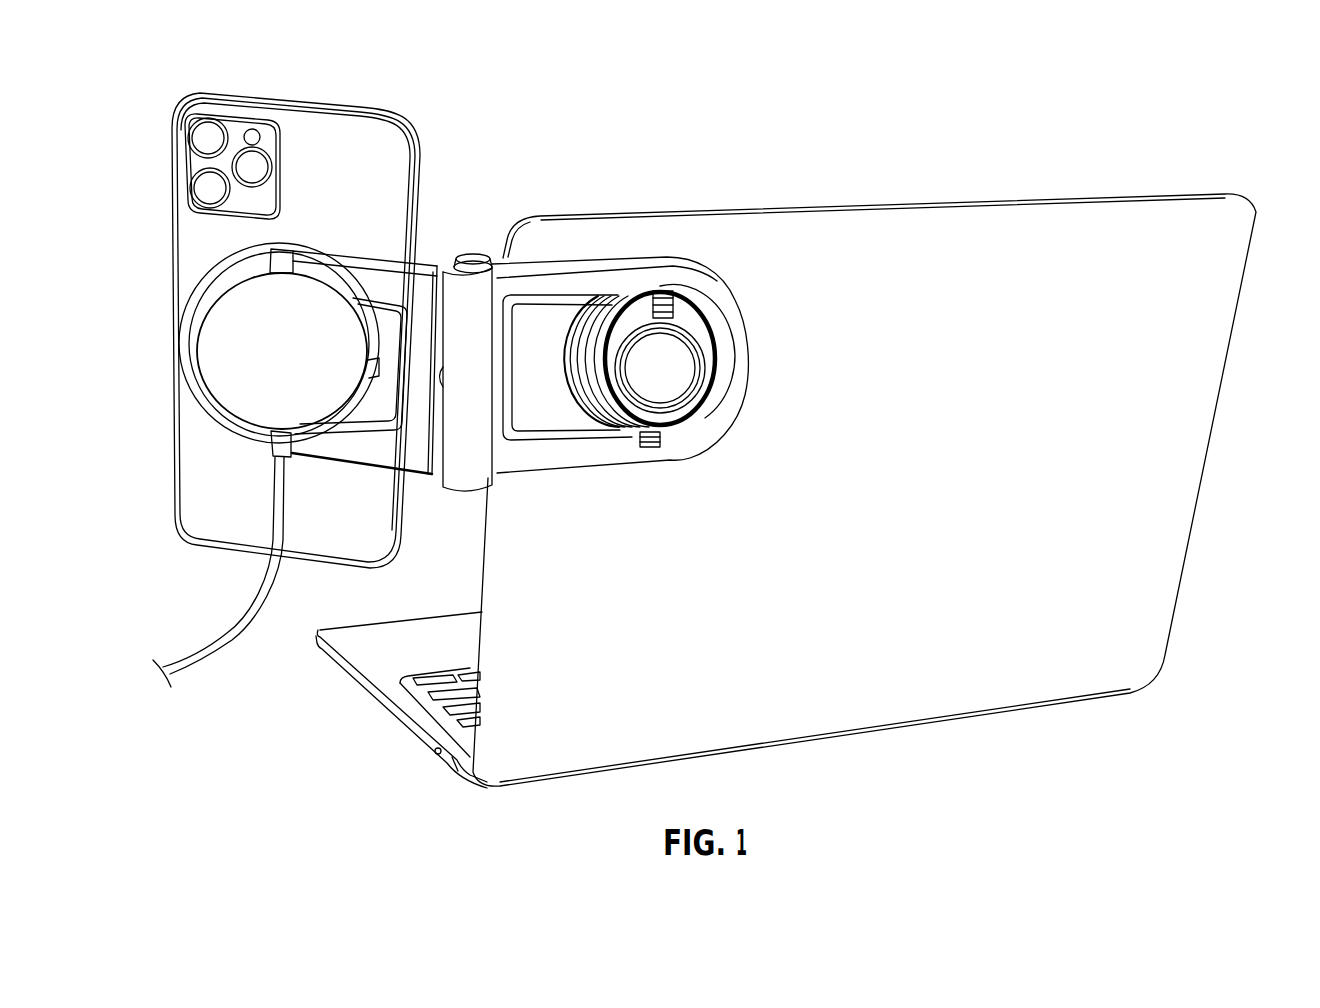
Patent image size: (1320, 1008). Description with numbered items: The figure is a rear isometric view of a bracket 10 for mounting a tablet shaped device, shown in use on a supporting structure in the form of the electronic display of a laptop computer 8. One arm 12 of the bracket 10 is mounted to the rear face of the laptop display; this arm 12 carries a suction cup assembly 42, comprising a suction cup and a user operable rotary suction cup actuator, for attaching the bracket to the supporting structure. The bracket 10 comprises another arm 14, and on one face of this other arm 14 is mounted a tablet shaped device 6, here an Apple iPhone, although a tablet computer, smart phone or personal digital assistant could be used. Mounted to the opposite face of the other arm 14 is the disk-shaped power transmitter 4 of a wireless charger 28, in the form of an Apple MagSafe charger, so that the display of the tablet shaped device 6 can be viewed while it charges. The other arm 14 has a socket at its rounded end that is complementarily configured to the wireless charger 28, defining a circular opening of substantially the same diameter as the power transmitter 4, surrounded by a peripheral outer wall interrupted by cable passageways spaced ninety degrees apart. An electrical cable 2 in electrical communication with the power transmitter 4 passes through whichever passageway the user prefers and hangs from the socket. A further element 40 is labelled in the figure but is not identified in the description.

The electrical cable 2 is at (233, 624).
The power transmitter 4 is at (290, 367).
The tablet shaped device 6 is at (199, 94).
The laptop computer 8 is at (1226, 275).
The bracket 10 is at (606, 480).
The arm 12 is at (578, 267).
The other arm 14 is at (186, 343).
The wireless charger 28 is at (216, 356).
The support arm 40 is at (197, 267).
The suction cup assembly 42 is at (677, 368).